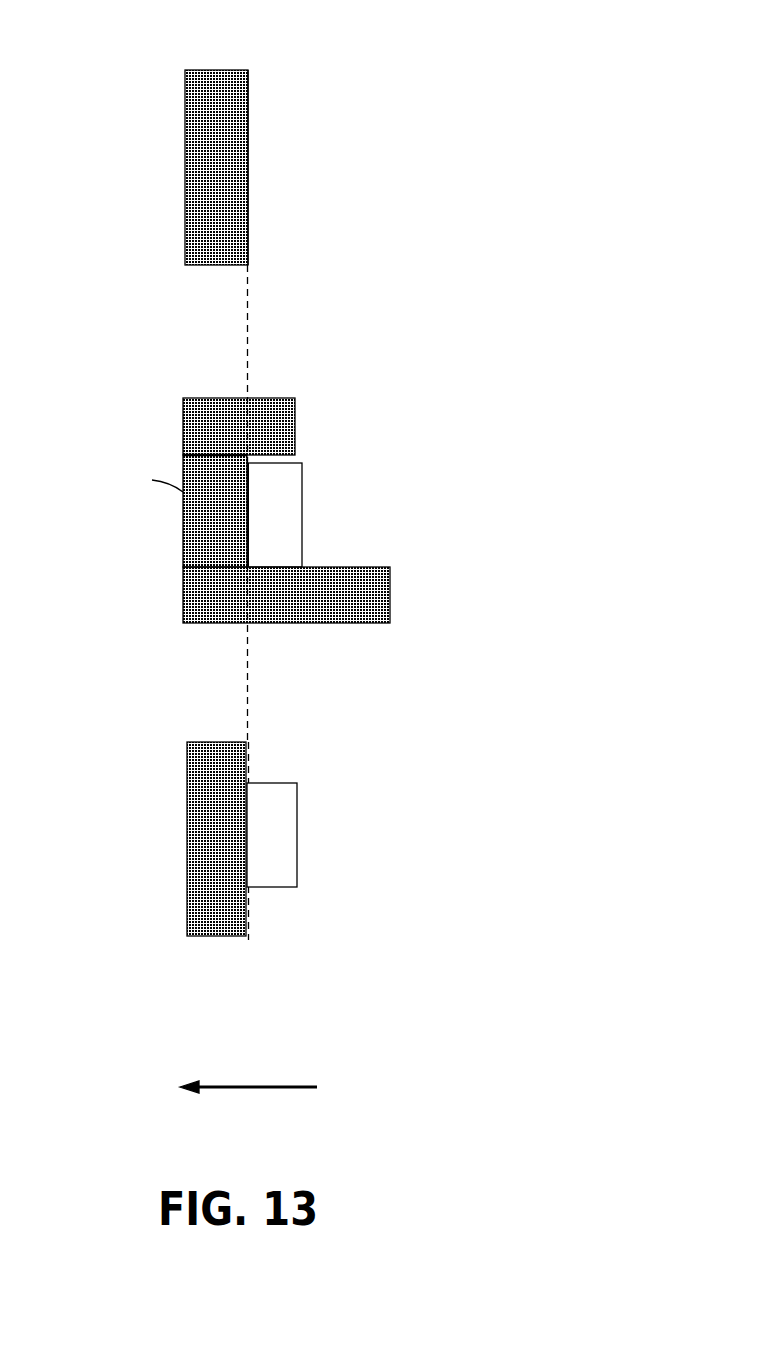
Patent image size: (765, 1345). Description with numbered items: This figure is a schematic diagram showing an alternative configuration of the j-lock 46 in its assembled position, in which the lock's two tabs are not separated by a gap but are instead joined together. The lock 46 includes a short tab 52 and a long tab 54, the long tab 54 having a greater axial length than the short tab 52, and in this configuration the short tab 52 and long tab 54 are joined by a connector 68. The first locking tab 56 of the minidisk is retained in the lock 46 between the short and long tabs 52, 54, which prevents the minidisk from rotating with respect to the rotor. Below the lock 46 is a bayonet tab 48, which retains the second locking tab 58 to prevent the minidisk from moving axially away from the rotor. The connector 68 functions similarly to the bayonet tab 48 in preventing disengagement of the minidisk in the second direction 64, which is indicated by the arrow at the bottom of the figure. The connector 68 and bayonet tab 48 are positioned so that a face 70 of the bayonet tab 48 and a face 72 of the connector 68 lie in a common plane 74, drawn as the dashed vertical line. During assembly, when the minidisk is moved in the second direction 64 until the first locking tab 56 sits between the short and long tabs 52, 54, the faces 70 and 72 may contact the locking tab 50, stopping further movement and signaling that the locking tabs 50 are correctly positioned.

The lock 46 is at (148, 397).
The bayonet tab 48 is at (212, 70).
The locking tab 50 is at (238, 690).
The short tab 52 is at (295, 397).
The long tab 54 is at (285, 623).
The first locking tab 56 is at (300, 502).
The second locking tab 58 is at (297, 860).
The second direction 64 is at (235, 1090).
The connector 68 is at (183, 510).
The face 70 is at (248, 100).
The face 72 is at (248, 498).
The plane 74 is at (248, 325).